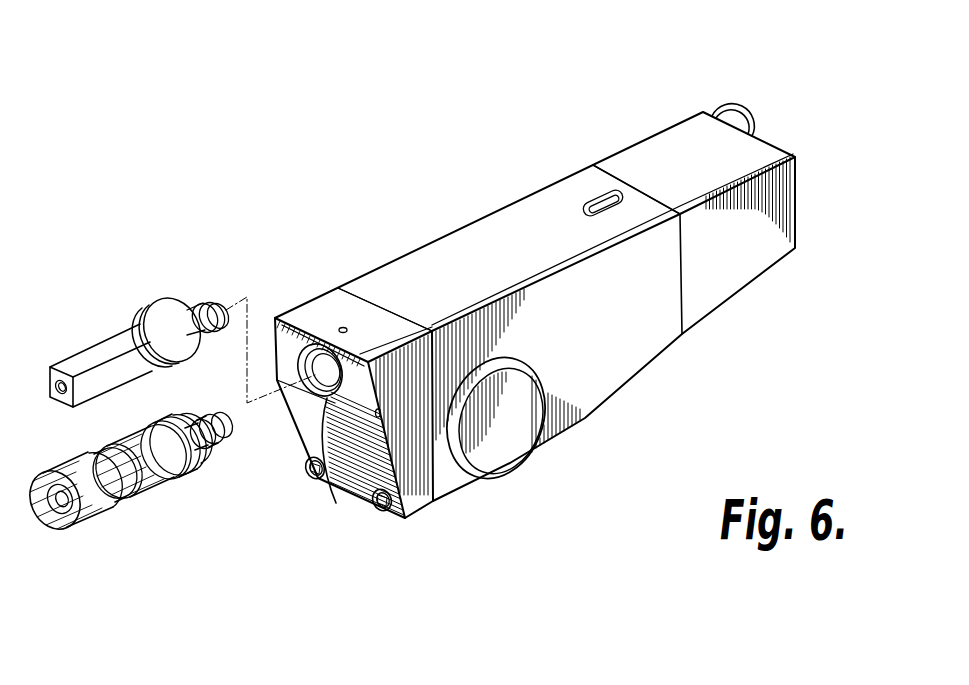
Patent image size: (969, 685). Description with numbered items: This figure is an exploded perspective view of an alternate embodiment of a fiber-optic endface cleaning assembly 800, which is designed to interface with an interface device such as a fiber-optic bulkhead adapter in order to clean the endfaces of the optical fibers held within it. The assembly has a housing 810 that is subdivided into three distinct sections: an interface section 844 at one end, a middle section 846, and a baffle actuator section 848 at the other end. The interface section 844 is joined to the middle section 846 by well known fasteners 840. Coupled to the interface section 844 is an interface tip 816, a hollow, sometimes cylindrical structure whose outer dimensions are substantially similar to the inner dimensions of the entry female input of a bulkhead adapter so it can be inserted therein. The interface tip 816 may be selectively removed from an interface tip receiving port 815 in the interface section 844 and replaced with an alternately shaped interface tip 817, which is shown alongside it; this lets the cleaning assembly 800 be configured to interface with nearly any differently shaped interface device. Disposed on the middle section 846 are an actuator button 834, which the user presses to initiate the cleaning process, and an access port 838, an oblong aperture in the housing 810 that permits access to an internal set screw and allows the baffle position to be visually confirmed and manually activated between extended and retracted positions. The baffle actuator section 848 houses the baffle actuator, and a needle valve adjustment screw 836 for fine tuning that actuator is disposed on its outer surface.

The fiber-optic endface cleaning assembly 800 is at (444, 99).
The housing 810 is at (647, 347).
The interface tip receiving port 815 is at (336, 503).
The interface tip 816 is at (96, 520).
The alternately shaped interface tip 817 is at (113, 345).
The actuator button 834 is at (527, 437).
The needle valve adjustment screw 836 is at (738, 101).
The access port 838 is at (598, 195).
The fasteners 840 is at (308, 473).
The interface section 844 is at (320, 305).
The middle section 846 is at (417, 252).
The baffle actuator section 848 is at (640, 138).